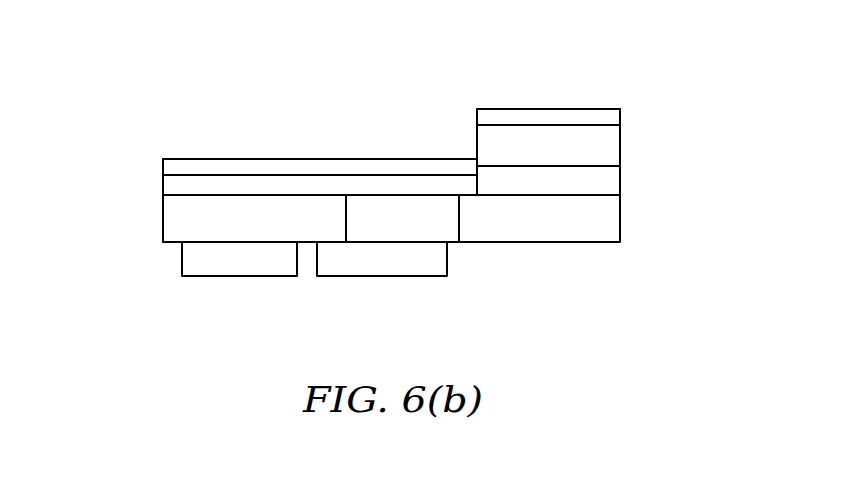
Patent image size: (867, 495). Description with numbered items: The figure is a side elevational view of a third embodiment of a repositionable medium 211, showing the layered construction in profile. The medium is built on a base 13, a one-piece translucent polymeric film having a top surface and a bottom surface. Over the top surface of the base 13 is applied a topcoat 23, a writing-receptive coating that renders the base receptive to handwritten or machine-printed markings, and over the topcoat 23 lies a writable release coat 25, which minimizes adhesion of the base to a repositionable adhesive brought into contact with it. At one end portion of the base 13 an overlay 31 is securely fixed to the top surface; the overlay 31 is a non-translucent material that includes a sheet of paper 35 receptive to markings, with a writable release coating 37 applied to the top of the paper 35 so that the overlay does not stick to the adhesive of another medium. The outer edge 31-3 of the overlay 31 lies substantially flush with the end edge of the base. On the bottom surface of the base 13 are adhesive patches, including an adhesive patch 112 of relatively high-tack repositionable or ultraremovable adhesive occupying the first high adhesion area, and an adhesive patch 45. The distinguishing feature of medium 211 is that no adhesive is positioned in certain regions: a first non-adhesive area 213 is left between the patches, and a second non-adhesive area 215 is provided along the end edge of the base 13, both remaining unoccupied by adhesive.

The base 13 is at (157, 220).
The topcoat 23 is at (195, 187).
The writable release coat 25 is at (258, 168).
The repositionable medium 211 is at (346, 127).
The overlay 31 is at (472, 120).
The writable release coating 37 is at (550, 108).
The outer edge 31-3 is at (620, 130).
The sheet of paper 35 is at (593, 145).
The adhesive patch 112 is at (237, 260).
The first non-adhesive area 213 is at (307, 244).
The second non-adhesive area 215 is at (172, 243).
The adhesive patch 45 is at (413, 262).